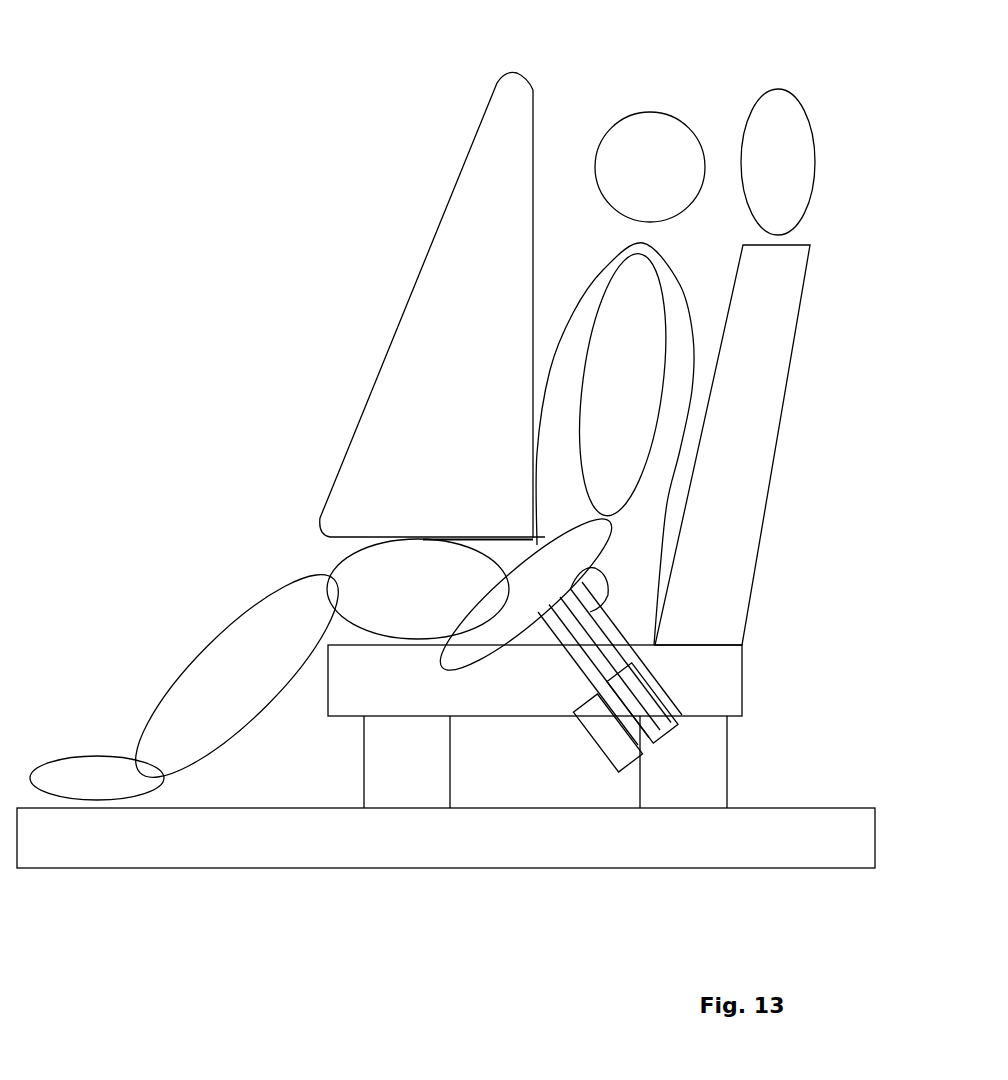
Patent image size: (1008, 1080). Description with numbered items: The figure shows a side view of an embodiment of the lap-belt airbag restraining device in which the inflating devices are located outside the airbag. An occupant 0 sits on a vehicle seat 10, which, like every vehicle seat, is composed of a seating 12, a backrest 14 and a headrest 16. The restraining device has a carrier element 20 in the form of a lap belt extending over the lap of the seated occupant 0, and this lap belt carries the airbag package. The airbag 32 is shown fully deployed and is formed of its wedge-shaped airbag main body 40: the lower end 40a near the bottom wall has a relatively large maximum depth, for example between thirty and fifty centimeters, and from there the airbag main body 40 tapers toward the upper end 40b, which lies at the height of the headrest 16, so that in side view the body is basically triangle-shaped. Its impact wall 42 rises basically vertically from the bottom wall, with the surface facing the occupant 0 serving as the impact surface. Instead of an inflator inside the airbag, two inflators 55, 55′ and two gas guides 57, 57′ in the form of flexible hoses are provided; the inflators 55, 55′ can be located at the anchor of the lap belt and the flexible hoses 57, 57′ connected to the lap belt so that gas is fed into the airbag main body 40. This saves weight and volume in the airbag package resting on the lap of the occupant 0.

The occupant 0 is at (380, 575).
The vehicle seat 10 is at (745, 675).
The seating 12 is at (390, 698).
The backrest 14 is at (750, 459).
The headrest 16 is at (783, 134).
The carrier element 20 is at (423, 540).
The airbag 32 is at (415, 272).
The airbag main body 40 is at (375, 365).
The lower end of the airbag main body 40a is at (367, 477).
The upper end of the airbag main body 40b is at (488, 158).
The impact wall 42 is at (540, 117).
The inflator 55 is at (615, 728).
The inflator 55′ is at (650, 712).
The gas guide 57 is at (557, 665).
The gas guide 57′ is at (573, 697).